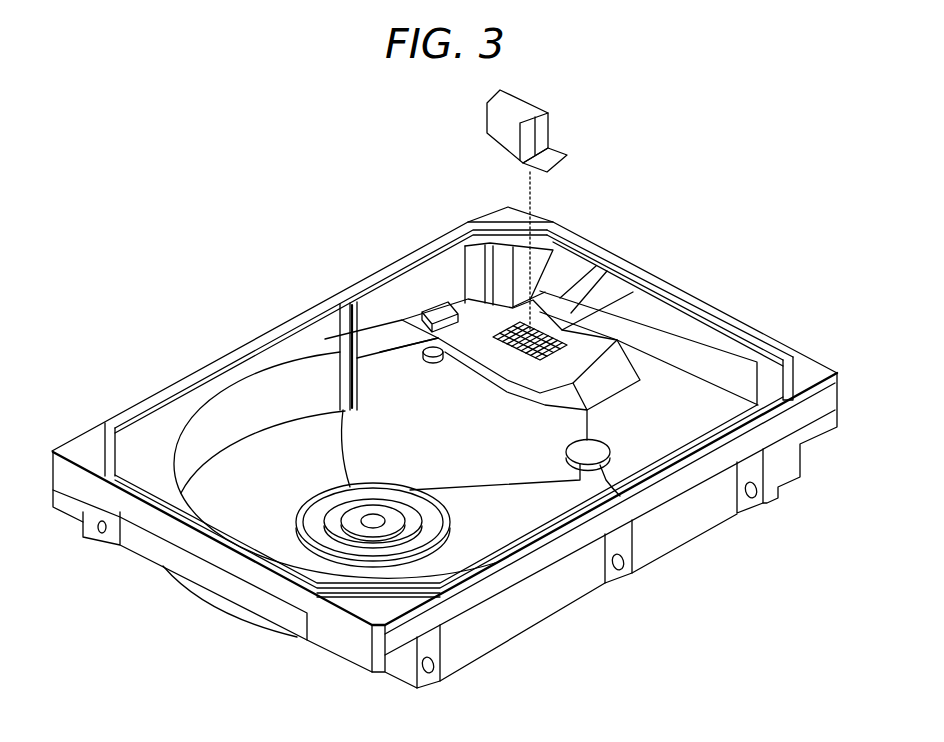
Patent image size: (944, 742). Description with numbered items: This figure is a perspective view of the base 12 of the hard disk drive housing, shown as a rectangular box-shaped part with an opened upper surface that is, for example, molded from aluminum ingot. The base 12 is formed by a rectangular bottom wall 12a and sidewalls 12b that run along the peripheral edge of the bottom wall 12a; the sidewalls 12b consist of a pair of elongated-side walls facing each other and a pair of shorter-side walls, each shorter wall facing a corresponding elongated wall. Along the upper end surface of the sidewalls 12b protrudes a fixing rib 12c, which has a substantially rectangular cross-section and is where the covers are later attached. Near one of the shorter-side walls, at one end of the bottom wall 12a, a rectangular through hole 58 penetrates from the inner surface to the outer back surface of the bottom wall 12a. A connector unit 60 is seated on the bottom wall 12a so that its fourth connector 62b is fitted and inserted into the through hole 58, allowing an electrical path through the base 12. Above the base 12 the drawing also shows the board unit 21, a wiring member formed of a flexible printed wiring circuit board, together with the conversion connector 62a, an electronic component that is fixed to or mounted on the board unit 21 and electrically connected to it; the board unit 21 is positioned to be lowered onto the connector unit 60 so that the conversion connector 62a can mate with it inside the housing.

The base 12 is at (762, 318).
The bottom wall 12a is at (275, 443).
The sidewalls 12b is at (337, 627).
The fixing rib 12c is at (132, 410).
The board unit 21 is at (487, 116).
The through hole 58 is at (540, 340).
The connector unit 60 is at (490, 315).
The conversion connector 62a is at (562, 167).
The fourth connector 62b is at (512, 347).